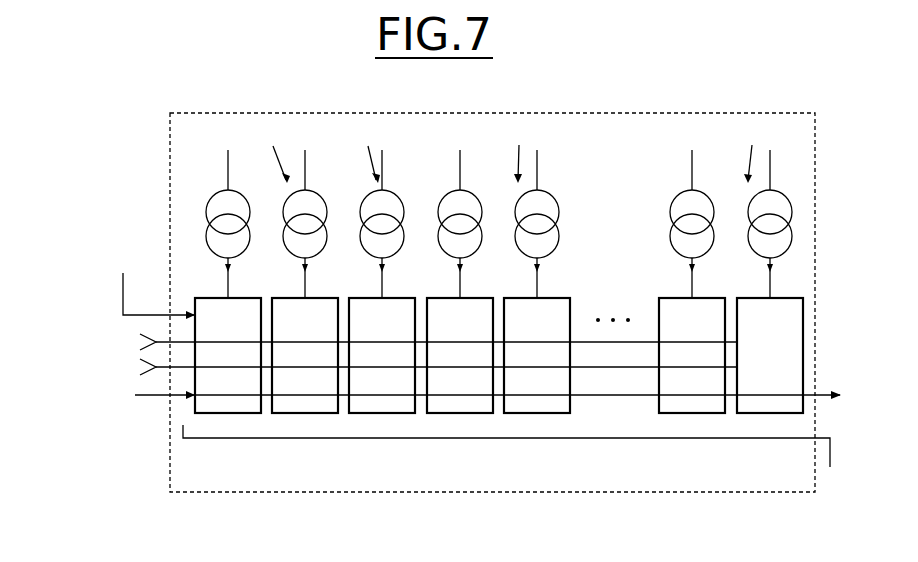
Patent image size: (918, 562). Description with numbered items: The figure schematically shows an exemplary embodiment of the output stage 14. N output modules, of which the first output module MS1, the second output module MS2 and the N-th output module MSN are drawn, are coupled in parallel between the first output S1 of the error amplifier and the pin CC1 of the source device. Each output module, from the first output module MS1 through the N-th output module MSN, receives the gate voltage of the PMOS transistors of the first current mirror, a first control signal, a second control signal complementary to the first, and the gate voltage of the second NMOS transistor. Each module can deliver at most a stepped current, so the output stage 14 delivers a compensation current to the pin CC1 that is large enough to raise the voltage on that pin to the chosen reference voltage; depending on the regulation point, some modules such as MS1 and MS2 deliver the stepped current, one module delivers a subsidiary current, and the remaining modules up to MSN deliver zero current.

The output stage 14 is at (437, 328).
The first output of the error amplifier S1 is at (149, 404).
The pin of the source device CC1 is at (528, 383).
The first output module MS1 is at (227, 432).
The second output module MS2 is at (304, 432).
The N-th output module MSN is at (770, 432).